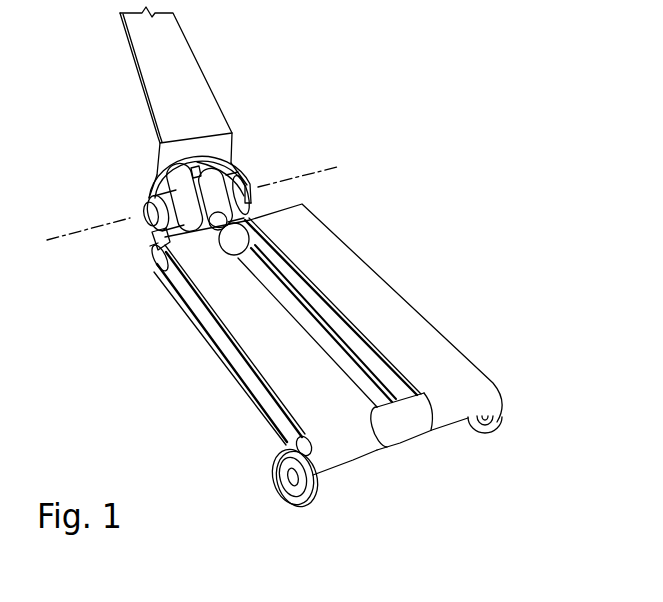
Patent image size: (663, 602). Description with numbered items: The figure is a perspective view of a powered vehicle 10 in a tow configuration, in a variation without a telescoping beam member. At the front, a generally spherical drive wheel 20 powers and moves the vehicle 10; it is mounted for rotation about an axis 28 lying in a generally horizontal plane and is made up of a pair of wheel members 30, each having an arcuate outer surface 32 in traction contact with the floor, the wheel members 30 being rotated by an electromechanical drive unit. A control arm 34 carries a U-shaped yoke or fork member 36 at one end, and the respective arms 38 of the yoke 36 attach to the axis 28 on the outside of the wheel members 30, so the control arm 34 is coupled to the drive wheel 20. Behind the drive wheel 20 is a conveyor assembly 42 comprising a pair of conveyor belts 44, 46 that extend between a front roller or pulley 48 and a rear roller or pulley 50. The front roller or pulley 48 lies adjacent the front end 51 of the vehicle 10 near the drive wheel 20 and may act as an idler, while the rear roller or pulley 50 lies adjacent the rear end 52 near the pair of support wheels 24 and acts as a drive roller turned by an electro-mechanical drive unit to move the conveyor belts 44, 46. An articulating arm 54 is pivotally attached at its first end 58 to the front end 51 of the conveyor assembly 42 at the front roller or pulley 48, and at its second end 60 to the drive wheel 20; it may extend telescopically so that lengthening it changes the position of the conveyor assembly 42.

The powered vehicle 10 is at (300, 284).
The drive wheel 20 is at (238, 165).
The support wheels 24 is at (309, 505).
The axis 28 is at (78, 238).
The wheel members 30 is at (245, 210).
The arcuate outer surface 32 is at (170, 226).
The control arm 34 is at (168, 107).
The yoke 36 is at (205, 152).
The arms of the yoke 38 is at (246, 176).
The conveyor assembly 42 is at (368, 262).
The conveyor belt 44 is at (277, 378).
The conveyor belt 46 is at (380, 295).
The front roller or pulley 48 is at (158, 278).
The rear roller or pulley 50 is at (405, 428).
The front end 51 is at (150, 246).
The rear end 52 is at (365, 452).
The articulating arm 54 is at (210, 237).
The first end 58 is at (250, 232).
The second end 60 is at (195, 168).